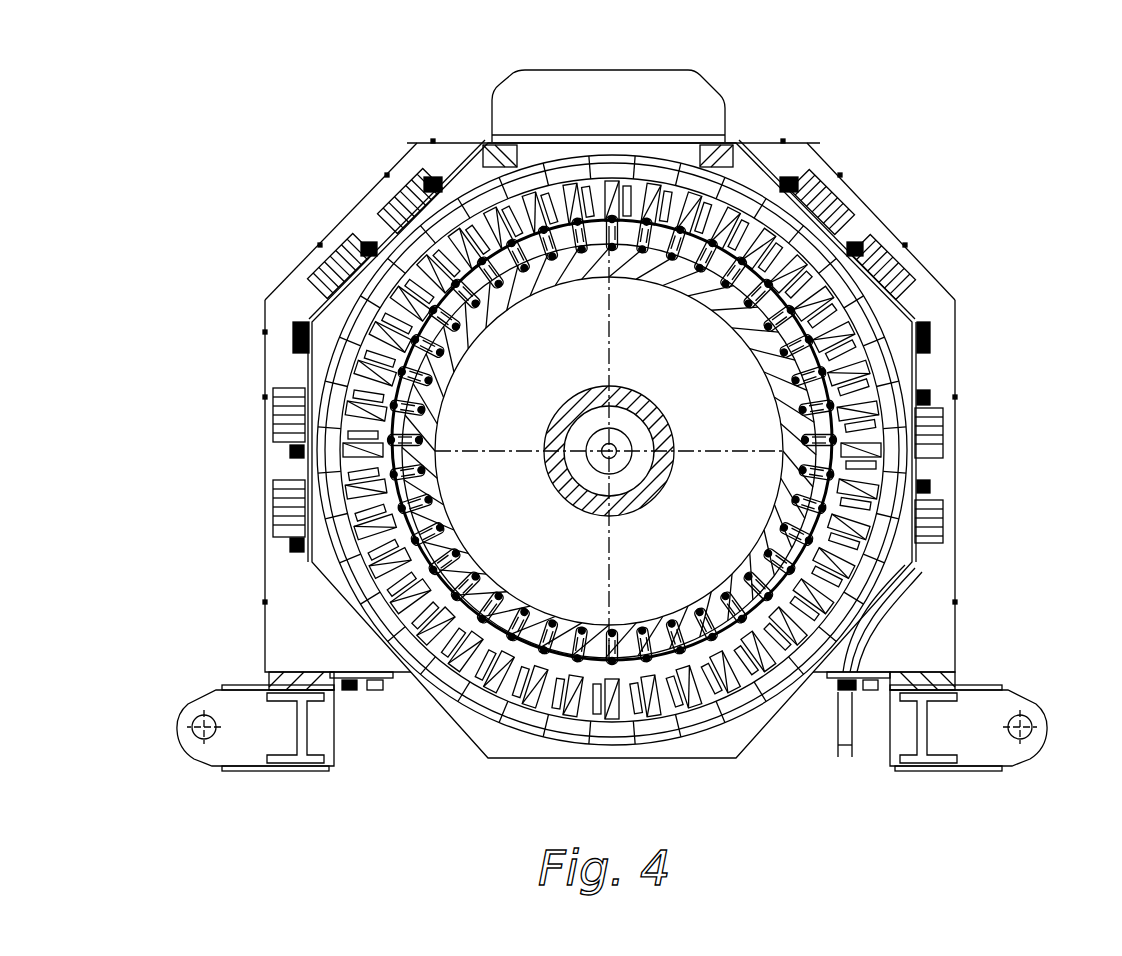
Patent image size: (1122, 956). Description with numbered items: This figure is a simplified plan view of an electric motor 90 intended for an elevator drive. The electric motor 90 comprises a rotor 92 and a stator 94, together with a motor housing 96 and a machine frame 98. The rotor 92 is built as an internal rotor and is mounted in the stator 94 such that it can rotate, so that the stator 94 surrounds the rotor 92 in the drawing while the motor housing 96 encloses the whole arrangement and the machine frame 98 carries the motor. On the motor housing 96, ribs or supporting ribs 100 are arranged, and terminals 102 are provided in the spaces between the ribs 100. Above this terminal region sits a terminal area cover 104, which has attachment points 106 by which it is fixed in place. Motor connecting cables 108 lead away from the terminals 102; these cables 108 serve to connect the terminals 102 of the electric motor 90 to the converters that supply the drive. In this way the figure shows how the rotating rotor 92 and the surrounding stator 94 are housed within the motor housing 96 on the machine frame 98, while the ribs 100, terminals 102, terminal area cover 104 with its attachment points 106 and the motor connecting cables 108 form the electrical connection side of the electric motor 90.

The electric motor 90 is at (303, 188).
The rotor 92 is at (420, 362).
The stator 94 is at (836, 405).
The motor housing 96 is at (468, 162).
The machine frame 98 is at (923, 762).
The supporting ribs 100 is at (367, 195).
The terminals 102 is at (830, 195).
The terminal area cover 104 is at (928, 275).
The attachment points 106 is at (898, 243).
The motor connecting cables 108 is at (888, 627).